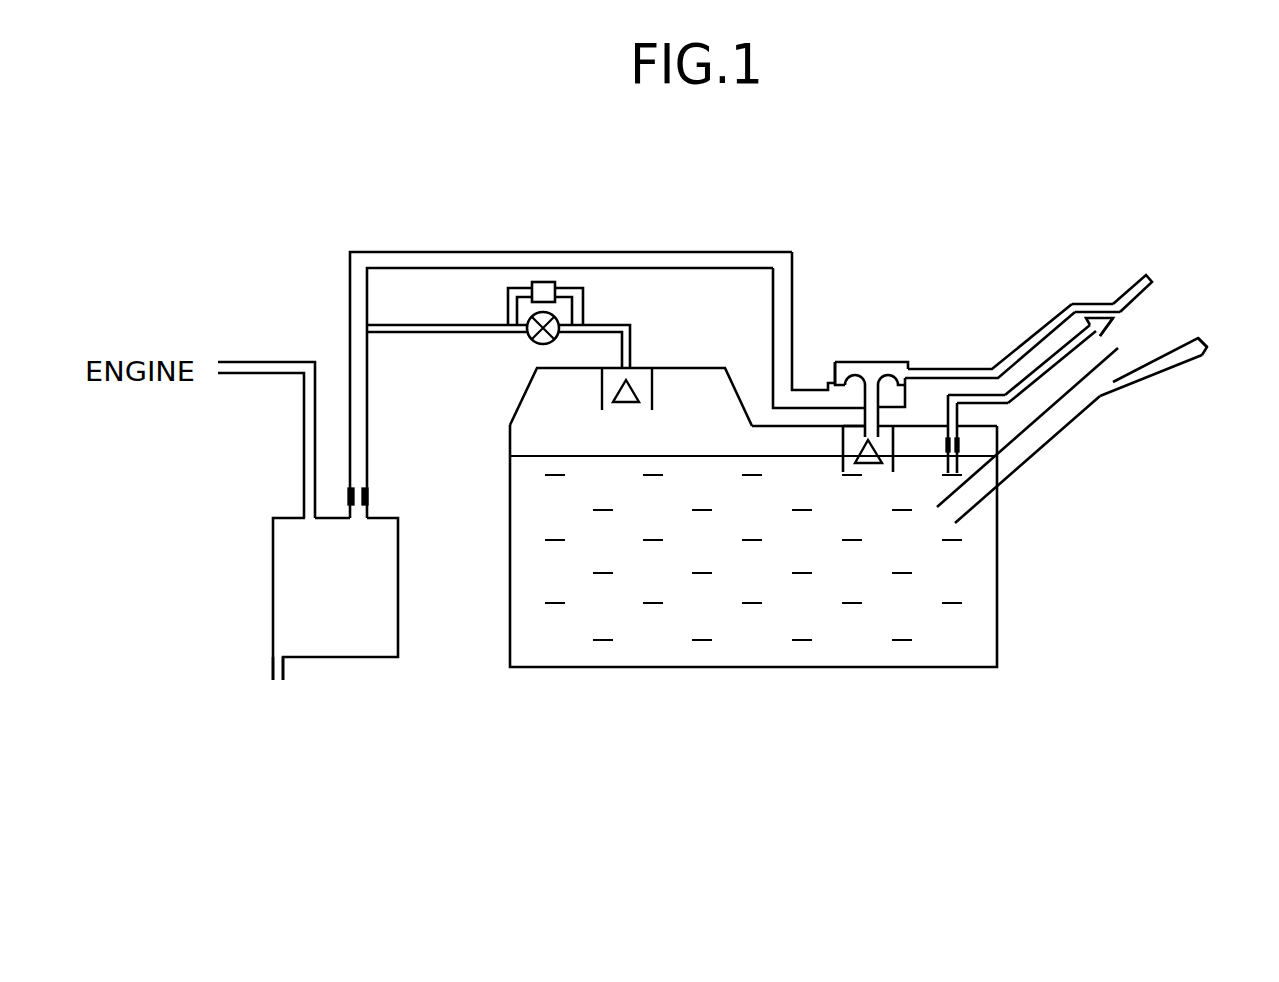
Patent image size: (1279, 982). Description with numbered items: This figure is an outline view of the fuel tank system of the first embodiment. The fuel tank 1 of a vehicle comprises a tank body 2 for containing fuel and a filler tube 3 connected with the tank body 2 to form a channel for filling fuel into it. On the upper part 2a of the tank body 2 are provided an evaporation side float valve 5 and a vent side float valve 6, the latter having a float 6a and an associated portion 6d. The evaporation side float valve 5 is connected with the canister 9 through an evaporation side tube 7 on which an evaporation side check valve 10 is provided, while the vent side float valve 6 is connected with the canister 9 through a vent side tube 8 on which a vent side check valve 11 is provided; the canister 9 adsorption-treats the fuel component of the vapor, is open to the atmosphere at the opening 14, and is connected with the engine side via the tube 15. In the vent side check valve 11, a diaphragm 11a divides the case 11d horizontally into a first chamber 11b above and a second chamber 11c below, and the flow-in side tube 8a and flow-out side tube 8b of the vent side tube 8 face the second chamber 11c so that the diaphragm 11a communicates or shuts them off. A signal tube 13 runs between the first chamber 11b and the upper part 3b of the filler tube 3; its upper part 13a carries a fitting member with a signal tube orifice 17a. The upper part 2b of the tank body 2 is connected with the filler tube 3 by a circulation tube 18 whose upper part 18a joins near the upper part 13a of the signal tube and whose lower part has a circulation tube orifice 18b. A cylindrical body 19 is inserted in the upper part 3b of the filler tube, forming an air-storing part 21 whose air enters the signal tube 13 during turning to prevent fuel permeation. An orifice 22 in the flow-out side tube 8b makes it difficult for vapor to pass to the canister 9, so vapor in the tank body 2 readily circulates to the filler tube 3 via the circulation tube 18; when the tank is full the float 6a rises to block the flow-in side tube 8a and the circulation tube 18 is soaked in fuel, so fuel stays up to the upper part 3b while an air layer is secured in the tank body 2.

The fuel tank 1 is at (1108, 492).
The tank body 2 is at (1000, 578).
The upper part of tank body 2a is at (677, 368).
The upper part of tank body 2b is at (757, 422).
The filler tube 3 is at (1052, 446).
The upper part of filler tube 3b is at (1199, 369).
The evaporation side float valve 5 is at (597, 388).
The vent side float valve 6 is at (842, 445).
The float 6a is at (868, 465).
The pump discharge port 6d is at (845, 430).
The evaporation side tube 7 is at (605, 323).
The vent side tube 8 is at (868, 205).
The flow-in side tube 8a is at (855, 407).
The flow-out side tube 8b is at (795, 288).
The canister 9 is at (385, 615).
The evaporation side check valve 10 is at (513, 278).
The vent side check valve 11 is at (900, 360).
The diaphragm 11a is at (882, 400).
The first chamber 11b is at (858, 378).
The second chamber 11c is at (910, 392).
The case 11d is at (887, 360).
The signal tube 13 is at (1037, 335).
The upper part of signal tube 13a is at (1082, 302).
The opening 14 is at (280, 673).
The tube 15 is at (262, 362).
The signal tube orifice 17a is at (1135, 308).
The circulation tube 18 is at (1042, 367).
The upper part of circulation tube 18a is at (1095, 327).
The circulation tube orifice 18b is at (958, 445).
The cylindrical body 19 is at (1155, 357).
The air-storing part 21 is at (1123, 333).
The orifice for the vent side tube 22 is at (370, 497).